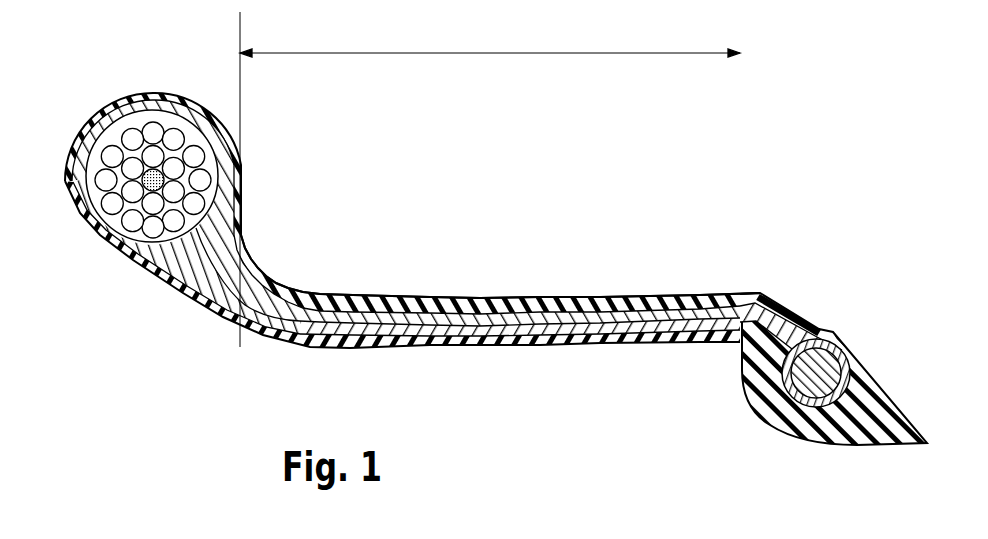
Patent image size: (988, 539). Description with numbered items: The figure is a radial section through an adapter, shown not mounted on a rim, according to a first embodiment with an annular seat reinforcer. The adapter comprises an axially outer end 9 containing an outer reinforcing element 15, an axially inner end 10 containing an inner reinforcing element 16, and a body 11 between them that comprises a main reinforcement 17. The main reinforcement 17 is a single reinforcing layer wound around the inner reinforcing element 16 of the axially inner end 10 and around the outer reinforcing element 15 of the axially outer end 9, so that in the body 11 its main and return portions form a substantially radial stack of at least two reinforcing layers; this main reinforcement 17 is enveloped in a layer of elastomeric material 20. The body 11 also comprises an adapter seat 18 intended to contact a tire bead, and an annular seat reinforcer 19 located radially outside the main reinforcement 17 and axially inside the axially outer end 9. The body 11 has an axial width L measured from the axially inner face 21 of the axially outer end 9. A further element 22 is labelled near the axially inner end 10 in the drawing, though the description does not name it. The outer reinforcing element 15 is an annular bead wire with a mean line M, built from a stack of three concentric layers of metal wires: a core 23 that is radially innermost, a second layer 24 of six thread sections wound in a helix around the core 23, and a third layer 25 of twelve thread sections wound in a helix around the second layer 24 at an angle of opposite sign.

The axially outer end 9 is at (228, 103).
The axially inner end 10 is at (843, 425).
The body 11 is at (478, 345).
The outer reinforcing element 15 is at (137, 210).
The inner reinforcing element 16 is at (801, 383).
The main reinforcement 17 is at (545, 334).
The adapter seat 18 is at (350, 293).
The annular seat reinforcer 19 is at (351, 335).
The layer of elastomeric material 20 is at (268, 338).
The axially inner face 21 is at (237, 158).
The wrapping layer 22 is at (740, 356).
The core 23 is at (147, 167).
The second layer 24 is at (182, 173).
The third layer 25 is at (178, 136).
The mean line M is at (90, 182).
The axial width L is at (490, 179).